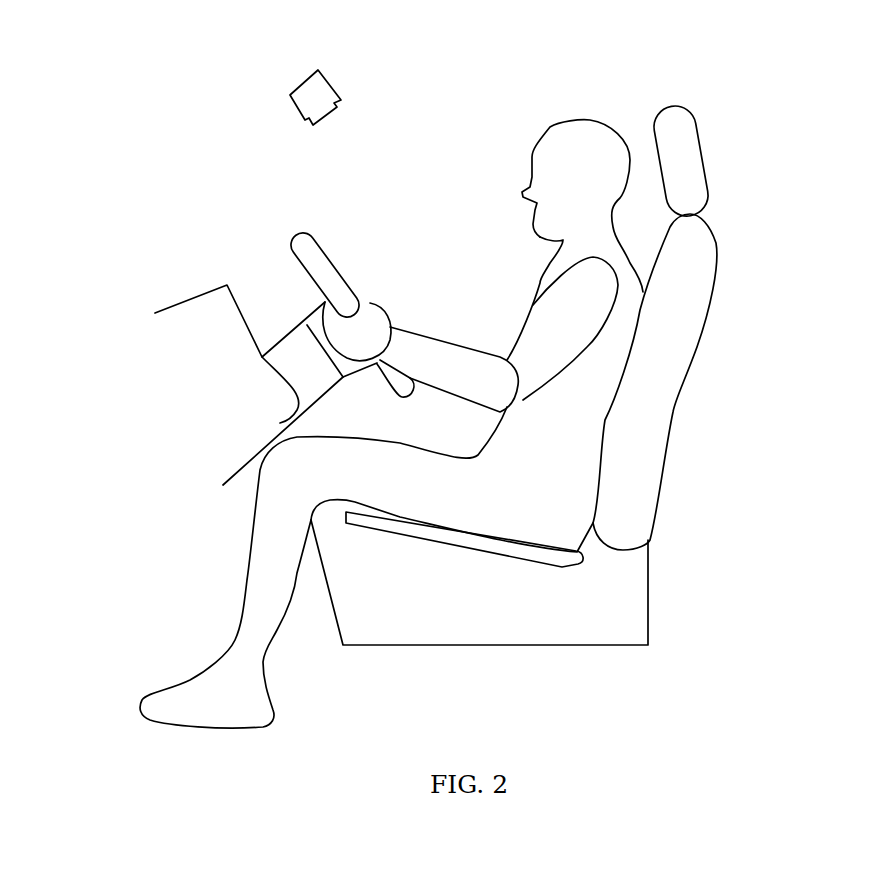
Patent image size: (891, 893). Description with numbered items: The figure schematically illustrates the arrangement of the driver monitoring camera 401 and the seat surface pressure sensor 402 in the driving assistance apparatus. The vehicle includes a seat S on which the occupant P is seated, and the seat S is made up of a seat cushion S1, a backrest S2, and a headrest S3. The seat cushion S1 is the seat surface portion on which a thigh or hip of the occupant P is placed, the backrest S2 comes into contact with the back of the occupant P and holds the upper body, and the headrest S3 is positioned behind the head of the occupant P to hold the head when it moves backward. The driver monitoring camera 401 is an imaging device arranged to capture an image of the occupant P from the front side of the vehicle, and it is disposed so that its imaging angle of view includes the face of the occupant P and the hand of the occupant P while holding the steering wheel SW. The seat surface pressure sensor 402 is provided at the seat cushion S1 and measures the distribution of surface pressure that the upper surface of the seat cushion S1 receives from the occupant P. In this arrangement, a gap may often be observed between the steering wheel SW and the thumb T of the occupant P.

The driver monitoring camera 401 is at (290, 95).
The seat surface pressure sensor 402 is at (563, 565).
The thumb T is at (364, 300).
The occupant P is at (530, 117).
The steering wheel SW is at (293, 257).
The seat S is at (472, 336).
The seat cushion S1 is at (315, 518).
The backrest S2 is at (673, 412).
The headrest S3 is at (687, 122).